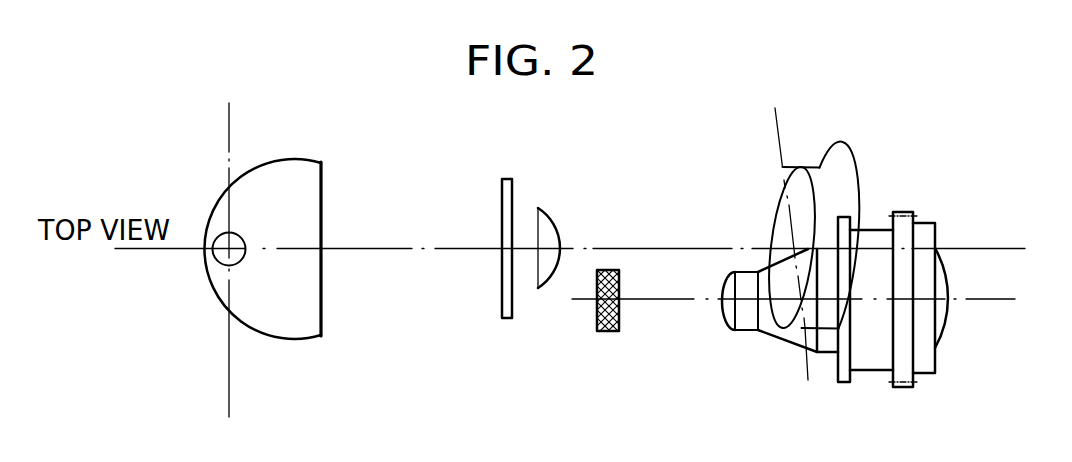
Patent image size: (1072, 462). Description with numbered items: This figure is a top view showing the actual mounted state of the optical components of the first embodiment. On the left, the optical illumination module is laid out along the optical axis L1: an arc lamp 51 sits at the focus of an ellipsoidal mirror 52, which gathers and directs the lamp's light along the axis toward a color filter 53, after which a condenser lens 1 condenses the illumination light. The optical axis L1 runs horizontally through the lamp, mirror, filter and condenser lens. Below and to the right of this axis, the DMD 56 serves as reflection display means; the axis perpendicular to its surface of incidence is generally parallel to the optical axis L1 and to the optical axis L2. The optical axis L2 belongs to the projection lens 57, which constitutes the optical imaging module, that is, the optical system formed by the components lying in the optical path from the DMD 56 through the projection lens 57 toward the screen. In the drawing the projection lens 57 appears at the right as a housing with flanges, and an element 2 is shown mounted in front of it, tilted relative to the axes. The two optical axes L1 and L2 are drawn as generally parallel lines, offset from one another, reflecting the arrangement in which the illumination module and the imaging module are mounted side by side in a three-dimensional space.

The condenser lens 1 is at (546, 290).
The tilted lens element 2 is at (808, 165).
The arc lamp 51 is at (223, 256).
The ellipsoidal mirror 52 is at (277, 163).
The color filter 53 is at (502, 295).
The DMD 56 is at (610, 332).
The projection lens 57 is at (865, 372).
The optical axis of the optical illumination module L1 is at (413, 247).
The optical axis of the projection lens L2 is at (693, 302).